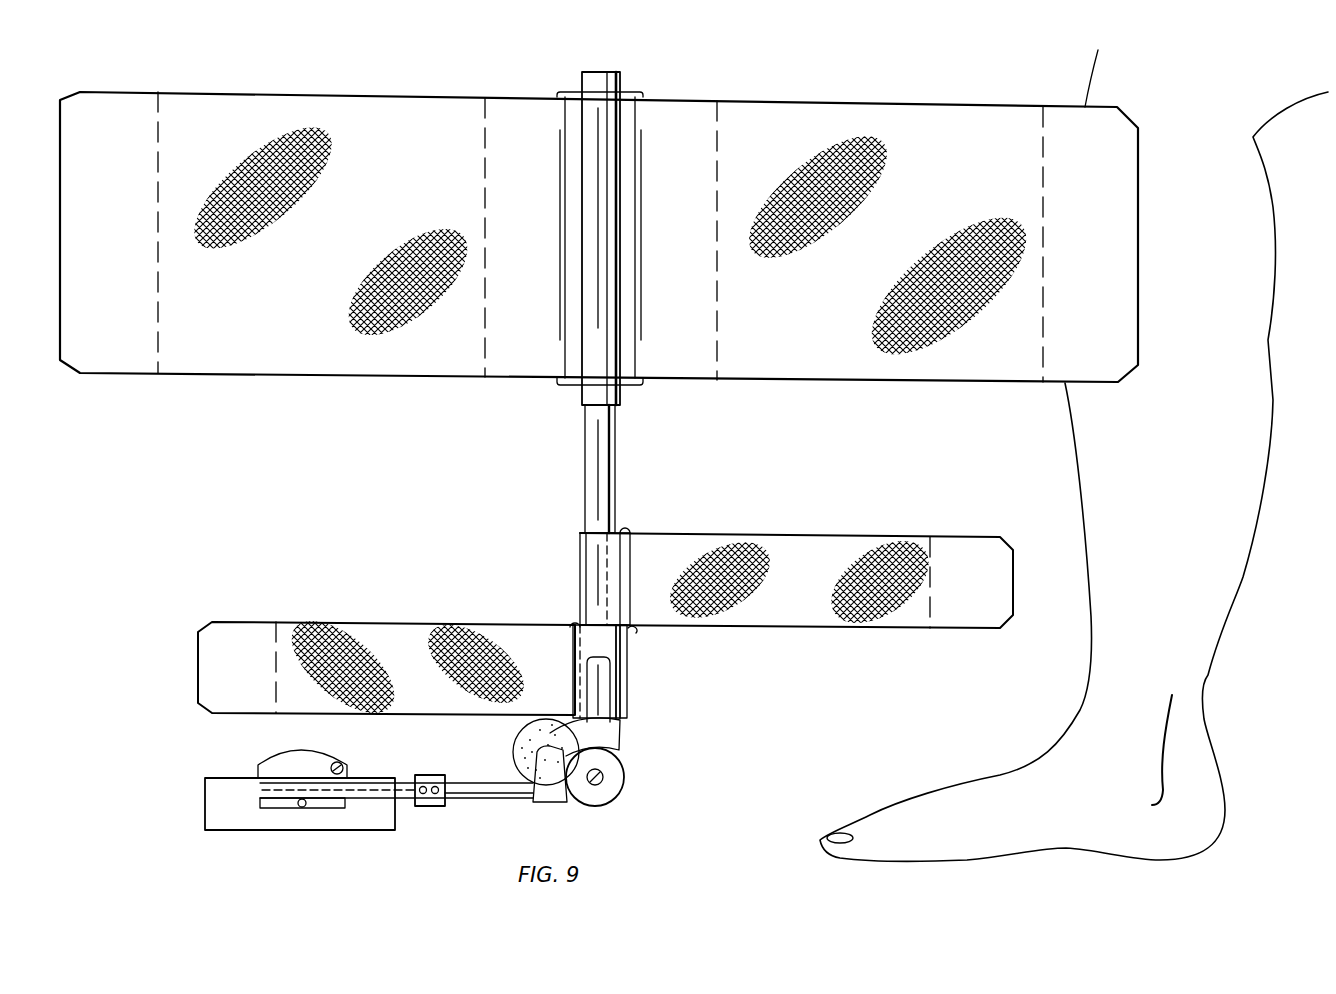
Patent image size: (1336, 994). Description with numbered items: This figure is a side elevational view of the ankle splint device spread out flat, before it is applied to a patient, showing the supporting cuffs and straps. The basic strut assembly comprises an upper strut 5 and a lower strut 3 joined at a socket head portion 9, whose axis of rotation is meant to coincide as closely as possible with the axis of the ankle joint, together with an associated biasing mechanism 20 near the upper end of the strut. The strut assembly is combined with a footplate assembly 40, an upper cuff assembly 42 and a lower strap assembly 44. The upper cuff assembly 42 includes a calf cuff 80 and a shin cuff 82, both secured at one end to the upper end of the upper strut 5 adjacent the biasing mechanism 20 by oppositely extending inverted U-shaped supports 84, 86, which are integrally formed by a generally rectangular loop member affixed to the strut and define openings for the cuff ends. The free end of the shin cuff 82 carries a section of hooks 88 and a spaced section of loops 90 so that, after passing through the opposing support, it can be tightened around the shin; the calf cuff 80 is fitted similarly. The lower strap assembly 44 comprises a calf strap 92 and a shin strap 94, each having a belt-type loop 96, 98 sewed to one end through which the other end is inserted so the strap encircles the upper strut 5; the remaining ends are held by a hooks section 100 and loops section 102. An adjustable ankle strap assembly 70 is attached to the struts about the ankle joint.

The lower strut 3 is at (488, 800).
The upper strut 5 is at (598, 468).
The socket head portion 9 is at (614, 780).
The biasing mechanism 20 is at (622, 211).
The footplate assembly 40 is at (320, 840).
The upper cuff assembly 42 is at (270, 84).
The lower strap assembly 44 is at (704, 526).
The ankle strap assembly 70 is at (527, 733).
The calf cuff 80 is at (756, 135).
The shin cuff 82 is at (432, 350).
The inverted U-shaped support 84 is at (640, 90).
The inverted U-shaped support 86 is at (571, 90).
The section of hooks 88 is at (100, 136).
The section of loops 90 is at (293, 120).
The calf strap 92 is at (790, 612).
The shin strap 94 is at (490, 650).
The belt-type loop 96 is at (634, 633).
The belt-type loop 98 is at (574, 622).
The hooks section 100 is at (240, 655).
The loops section 102 is at (366, 642).